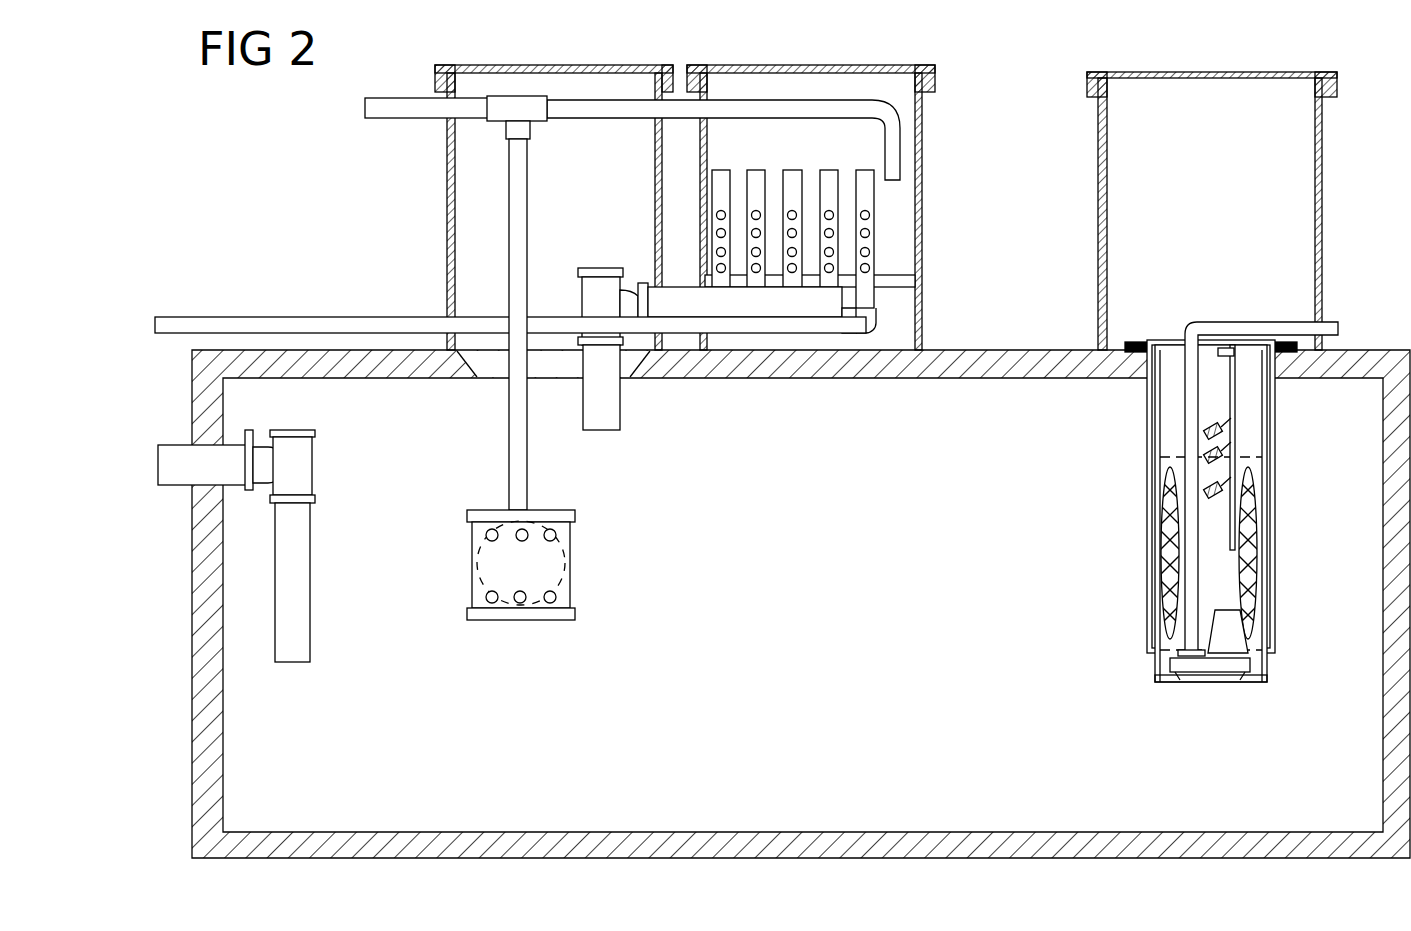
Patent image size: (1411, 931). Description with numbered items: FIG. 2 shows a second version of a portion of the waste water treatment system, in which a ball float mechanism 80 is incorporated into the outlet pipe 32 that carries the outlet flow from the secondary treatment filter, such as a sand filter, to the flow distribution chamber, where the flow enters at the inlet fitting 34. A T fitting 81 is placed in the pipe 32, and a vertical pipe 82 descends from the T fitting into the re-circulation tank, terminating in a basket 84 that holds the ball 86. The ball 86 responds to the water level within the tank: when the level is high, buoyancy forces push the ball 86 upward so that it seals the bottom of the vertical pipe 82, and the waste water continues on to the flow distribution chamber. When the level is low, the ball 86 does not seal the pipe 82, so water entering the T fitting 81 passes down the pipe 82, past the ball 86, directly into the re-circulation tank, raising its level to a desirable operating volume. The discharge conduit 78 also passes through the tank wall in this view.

The outlet pipe 32 is at (390, 111).
The inlet fitting 34 is at (894, 150).
The discharge conduit 78 is at (318, 322).
The ball float mechanism 80 is at (660, 575).
The T fitting 81 is at (500, 116).
The vertical pipe 82 is at (520, 408).
The basket 84 is at (571, 512).
The ball 86 is at (560, 538).